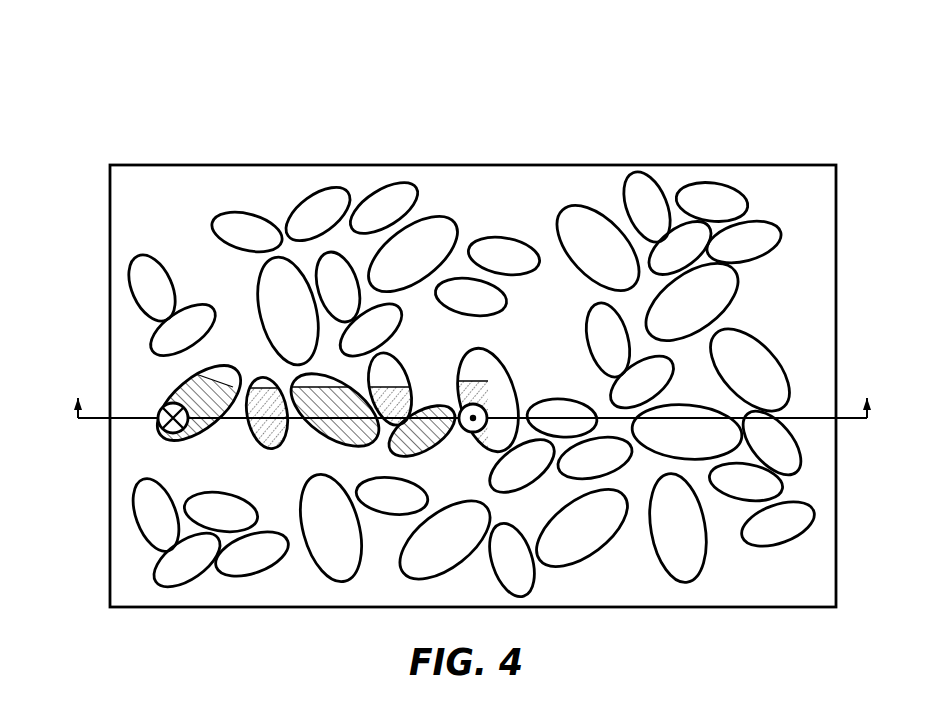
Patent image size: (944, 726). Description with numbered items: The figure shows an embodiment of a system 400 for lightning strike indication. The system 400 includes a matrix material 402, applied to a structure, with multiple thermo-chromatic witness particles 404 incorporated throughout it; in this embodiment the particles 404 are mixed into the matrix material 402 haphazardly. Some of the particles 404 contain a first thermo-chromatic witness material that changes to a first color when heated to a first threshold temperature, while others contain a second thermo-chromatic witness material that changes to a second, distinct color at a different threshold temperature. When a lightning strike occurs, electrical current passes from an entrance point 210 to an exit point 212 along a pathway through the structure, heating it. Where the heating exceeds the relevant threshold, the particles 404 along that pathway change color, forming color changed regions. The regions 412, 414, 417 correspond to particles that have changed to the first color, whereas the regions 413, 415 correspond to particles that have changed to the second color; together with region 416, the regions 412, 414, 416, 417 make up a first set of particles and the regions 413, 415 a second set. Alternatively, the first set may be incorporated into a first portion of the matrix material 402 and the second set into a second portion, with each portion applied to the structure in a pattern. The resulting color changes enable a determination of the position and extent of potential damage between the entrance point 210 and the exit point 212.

The system for lightning strike indication 400 is at (172, 70).
The matrix material 402 is at (125, 165).
The thermo-chromatic witness particles 404 is at (292, 215).
The entrance point 210 is at (166, 406).
The exit point 212 is at (473, 432).
The color changed region 412 is at (195, 447).
The color changed region 413 is at (274, 450).
The color changed region 414 is at (339, 452).
The color changed region 415 is at (383, 387).
The color changed region 416 is at (432, 410).
The color changed region 417 is at (467, 390).